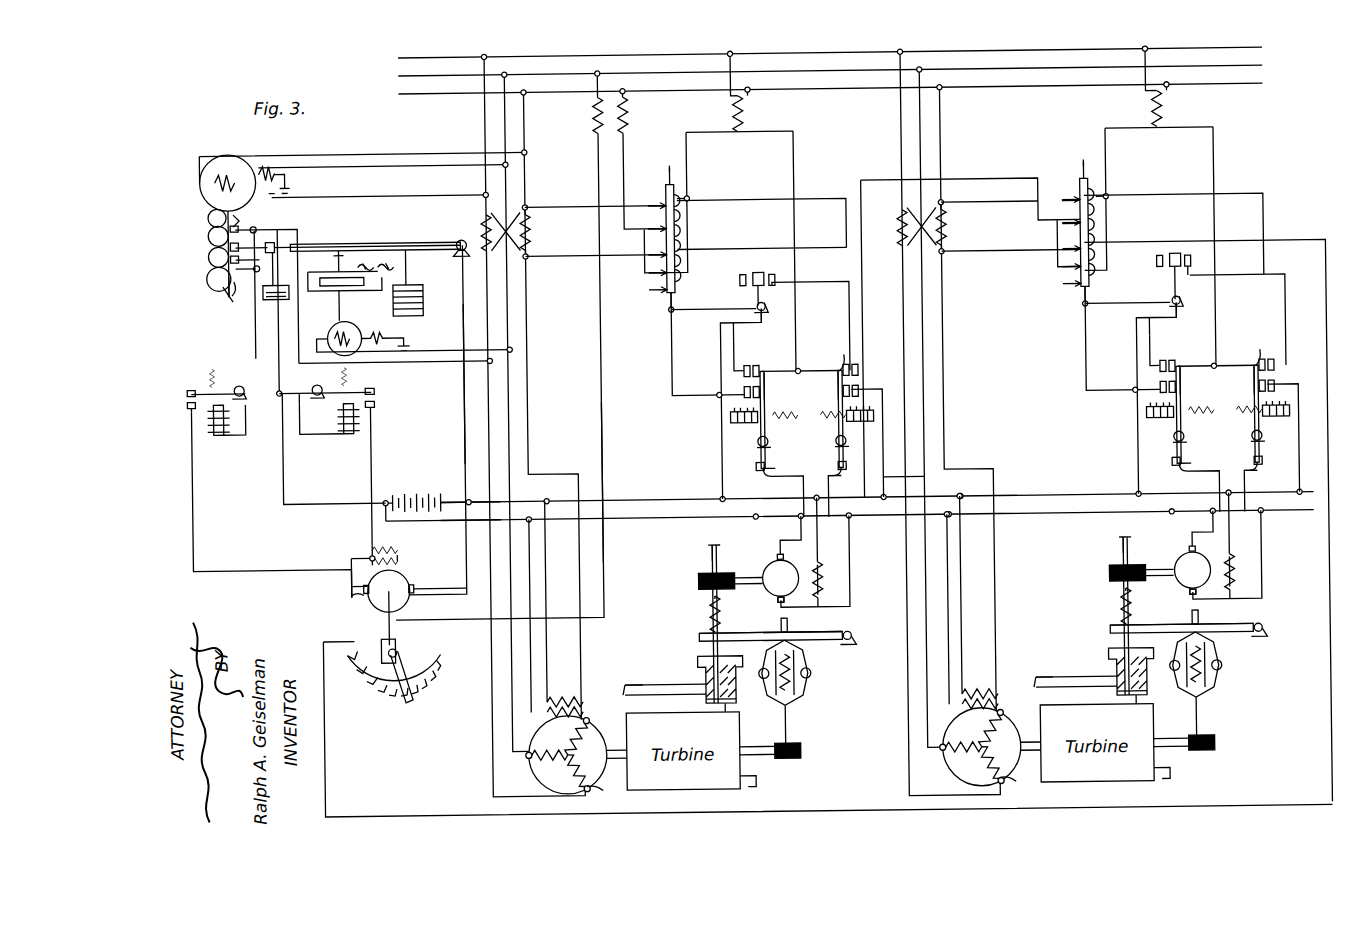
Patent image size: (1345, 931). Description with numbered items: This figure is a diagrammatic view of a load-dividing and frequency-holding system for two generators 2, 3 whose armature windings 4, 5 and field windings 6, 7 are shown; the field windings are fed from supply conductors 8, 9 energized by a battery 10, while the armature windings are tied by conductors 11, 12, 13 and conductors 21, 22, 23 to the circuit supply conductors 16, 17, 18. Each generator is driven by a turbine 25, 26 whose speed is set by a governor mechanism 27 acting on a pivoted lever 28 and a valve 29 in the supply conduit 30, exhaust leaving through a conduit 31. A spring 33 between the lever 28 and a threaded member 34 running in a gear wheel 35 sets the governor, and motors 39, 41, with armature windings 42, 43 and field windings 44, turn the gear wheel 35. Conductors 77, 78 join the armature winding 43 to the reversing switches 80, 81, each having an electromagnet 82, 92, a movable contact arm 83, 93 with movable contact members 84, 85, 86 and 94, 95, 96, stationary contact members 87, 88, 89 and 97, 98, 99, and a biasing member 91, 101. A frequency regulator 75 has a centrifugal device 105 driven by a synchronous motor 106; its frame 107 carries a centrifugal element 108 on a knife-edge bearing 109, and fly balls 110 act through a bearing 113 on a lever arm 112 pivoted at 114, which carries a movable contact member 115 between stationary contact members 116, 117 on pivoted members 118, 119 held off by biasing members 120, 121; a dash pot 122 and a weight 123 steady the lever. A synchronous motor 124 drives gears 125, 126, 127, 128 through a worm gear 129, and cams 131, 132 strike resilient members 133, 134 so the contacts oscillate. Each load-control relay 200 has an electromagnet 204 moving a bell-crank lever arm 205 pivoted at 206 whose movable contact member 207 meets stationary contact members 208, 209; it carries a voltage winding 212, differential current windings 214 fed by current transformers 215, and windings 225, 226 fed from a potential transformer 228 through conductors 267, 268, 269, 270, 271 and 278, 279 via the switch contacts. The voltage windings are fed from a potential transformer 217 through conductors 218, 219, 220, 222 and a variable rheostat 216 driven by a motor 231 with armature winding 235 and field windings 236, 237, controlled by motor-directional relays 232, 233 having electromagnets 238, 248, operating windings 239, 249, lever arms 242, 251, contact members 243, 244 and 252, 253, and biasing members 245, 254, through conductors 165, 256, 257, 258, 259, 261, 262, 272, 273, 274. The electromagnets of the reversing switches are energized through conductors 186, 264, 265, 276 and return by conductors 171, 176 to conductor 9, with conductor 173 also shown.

The generator 2 is at (616, 719).
The generator 3 is at (1027, 716).
The armature winding 4 is at (606, 787).
The armature winding 5 is at (1017, 781).
The field winding 6 is at (570, 686).
The field winding 7 is at (984, 684).
The supply conductor 8 is at (634, 500).
The supply conductor 9 is at (650, 522).
The battery 10 is at (428, 486).
The conductor 11 is at (523, 426).
The conductor 12 is at (506, 448).
The conductor 13 is at (530, 430).
The circuit supply conductor 16 is at (836, 40).
The circuit supply conductor 17 is at (846, 60).
The circuit supply conductor 18 is at (848, 78).
The conductor 21 is at (895, 425).
The conductor 22 is at (903, 477).
The conductor 23 is at (947, 447).
The turbine 25 is at (690, 792).
The turbine 26 is at (1113, 792).
The governor mechanism 27 is at (806, 680).
The pivoted lever 28 is at (830, 634).
The valve 29 is at (696, 661).
The supply conduit 30 is at (634, 678).
The conduit 31 is at (754, 783).
The spring 33 is at (706, 610).
The threaded member 34 is at (709, 551).
The gear wheel 35 is at (695, 579).
The motor 39 is at (754, 556).
The motor 41 is at (1171, 549).
The armature winding 42 is at (776, 600).
The armature winding 43 is at (1188, 597).
The field winding 44 is at (822, 572).
The frequency regulator 75 is at (375, 232).
The conductor 77 is at (804, 470).
The conductor 78 is at (830, 478).
The reversing switch 80 is at (957, 447).
The reversing switch 81 is at (1063, 427).
The electromagnet 82 is at (738, 430).
The movable contact arm 83 is at (985, 396).
The movable contact member 84 is at (989, 468).
The movable contact member 85 is at (986, 379).
The movable contact member 86 is at (762, 370).
The stationary contact member 87 is at (756, 470).
The stationary contact member 88 is at (744, 398).
The stationary contact member 89 is at (954, 356).
The biasing member 91 is at (994, 424).
The electromagnet 92 is at (860, 430).
The movable contact arm 93 is at (832, 394).
The movable contact member 94 is at (830, 478).
The movable contact member 95 is at (1029, 394).
The movable contact member 96 is at (842, 370).
The stationary contact member 97 is at (846, 468).
The stationary contact member 98 is at (860, 388).
The stationary contact member 99 is at (860, 366).
The biasing member 101 is at (1032, 424).
The centrifugal device 105 is at (321, 307).
The synchronous motor 106 is at (330, 334).
The frame 107 is at (348, 300).
The centrifugal element 108 is at (345, 278).
The knife-edge bearing 109 is at (409, 266).
The fly balls 110 is at (374, 258).
The lever arm 112 is at (328, 238).
The bearing 113 is at (338, 252).
The pivot 114 is at (460, 236).
The movable contact member 115 is at (251, 240).
The stationary contact member 116 is at (283, 256).
The stationary contact member 117 is at (248, 259).
The pivoted member 118 is at (270, 218).
The pivoted member 119 is at (259, 272).
The biasing member 120 is at (256, 222).
The biasing member 121 is at (232, 290).
The dash pot 122 is at (276, 294).
The weight 123 is at (425, 294).
The synchronous motor 124 is at (224, 158).
The gear 125 is at (210, 212).
The gear 126 is at (212, 236).
The gear 127 is at (212, 256).
The gear 128 is at (210, 278).
The worm gear 129 is at (236, 214).
The cam 131 is at (218, 190).
The cam 132 is at (222, 290).
The resilient member 133 is at (230, 230).
The resilient member 134 is at (236, 292).
The conductor 165 is at (466, 418).
The conductor 171 is at (850, 510).
The conductor 173 is at (1088, 440).
The conductor 176 is at (877, 509).
The conductor 186 is at (722, 467).
The load-control relay 200 is at (675, 357).
The electromagnet 204 is at (867, 149).
The bell-crank lever arm 205 is at (920, 286).
The pivot 206 is at (758, 305).
The movable contact member 207 is at (964, 274).
The stationary contact member 208 is at (740, 274).
The stationary contact member 209 is at (786, 262).
The voltage winding 212 is at (652, 244).
The current winding 214 is at (1066, 266).
The current transformer 215 is at (536, 254).
The variable rheostat 216 is at (406, 700).
The potential transformer 217 is at (597, 128).
The conductor 218 is at (627, 140).
The conductor 219 is at (724, 250).
The conductor 220 is at (1142, 256).
The conductor 222 is at (604, 552).
The winding 225 is at (657, 204).
The winding 226 is at (664, 290).
The potential transformer 228 is at (752, 108).
The motor 231 is at (401, 606).
The motor-directional relay 232 is at (218, 425).
The motor-directional relay 233 is at (325, 431).
The armature winding 235 is at (358, 594).
The series field winding 236 is at (395, 556).
The series field winding 237 is at (392, 544).
The electromagnet 238 is at (226, 428).
The operating winding 239 is at (226, 410).
The pivoted lever arm 242 is at (238, 383).
The movable contact member 243 is at (177, 400).
The stationary contact member 244 is at (177, 415).
The biasing member 245 is at (211, 378).
The electromagnet 248 is at (344, 430).
The operating winding 249 is at (342, 410).
The lever arm 251 is at (340, 378).
The movable contact member 252 is at (376, 388).
The fixed contact member 253 is at (376, 402).
The biasing member 254 is at (336, 382).
The conductor 256 is at (258, 346).
The conductor 257 is at (281, 380).
The conductor 258 is at (282, 464).
The conductor 259 is at (196, 552).
The conductor 261 is at (344, 552).
The conductor 262 is at (464, 592).
The conductor 264 is at (700, 387).
The conductor 265 is at (861, 326).
The conductor 267 is at (692, 162).
The conductor 268 is at (692, 194).
The conductor 269 is at (746, 206).
The conductor 270 is at (1032, 355).
The conductor 271 is at (798, 326).
The conductor 272 is at (289, 336).
The conductor 273 is at (300, 400).
The conductor 274 is at (372, 458).
The conductor 276 is at (735, 328).
The conductor 278 is at (734, 367).
The conductor 279 is at (1009, 356).